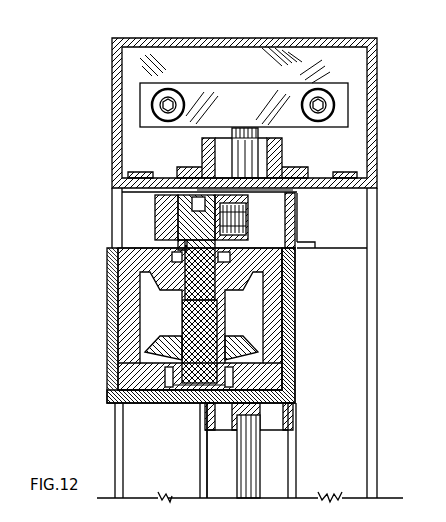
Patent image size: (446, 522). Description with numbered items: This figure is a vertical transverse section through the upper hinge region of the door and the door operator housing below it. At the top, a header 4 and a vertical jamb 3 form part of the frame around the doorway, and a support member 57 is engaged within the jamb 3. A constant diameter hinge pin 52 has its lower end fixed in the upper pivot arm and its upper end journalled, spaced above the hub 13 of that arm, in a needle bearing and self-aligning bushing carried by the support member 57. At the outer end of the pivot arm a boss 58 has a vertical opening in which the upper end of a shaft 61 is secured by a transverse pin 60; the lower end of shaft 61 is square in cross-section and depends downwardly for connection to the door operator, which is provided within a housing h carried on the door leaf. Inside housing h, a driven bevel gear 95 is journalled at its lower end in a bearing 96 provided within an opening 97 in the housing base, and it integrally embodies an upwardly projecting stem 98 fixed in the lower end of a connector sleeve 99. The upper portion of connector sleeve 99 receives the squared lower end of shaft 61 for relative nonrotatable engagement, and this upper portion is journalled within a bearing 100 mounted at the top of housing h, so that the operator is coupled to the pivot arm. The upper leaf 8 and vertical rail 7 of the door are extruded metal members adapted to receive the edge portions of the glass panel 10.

The header 4 is at (110, 102).
The support member 57 is at (318, 55).
The hinge pin 52 is at (262, 129).
The hub 13 is at (227, 157).
The boss 58 is at (160, 213).
The transverse pin 60 is at (172, 230).
The shaft 61 is at (247, 233).
The housing h is at (122, 310).
The upper leaf 8 is at (295, 373).
The connector sleeve 99 is at (168, 312).
The driven bevel gear 95 is at (144, 347).
The bearing 100 is at (230, 294).
The stem 98 is at (212, 328).
The opening 97 is at (153, 392).
The bearing 96 is at (177, 392).
The vertical jamb 3 is at (116, 417).
The glass panel 10 is at (243, 443).
The vertical rail 7 is at (205, 477).